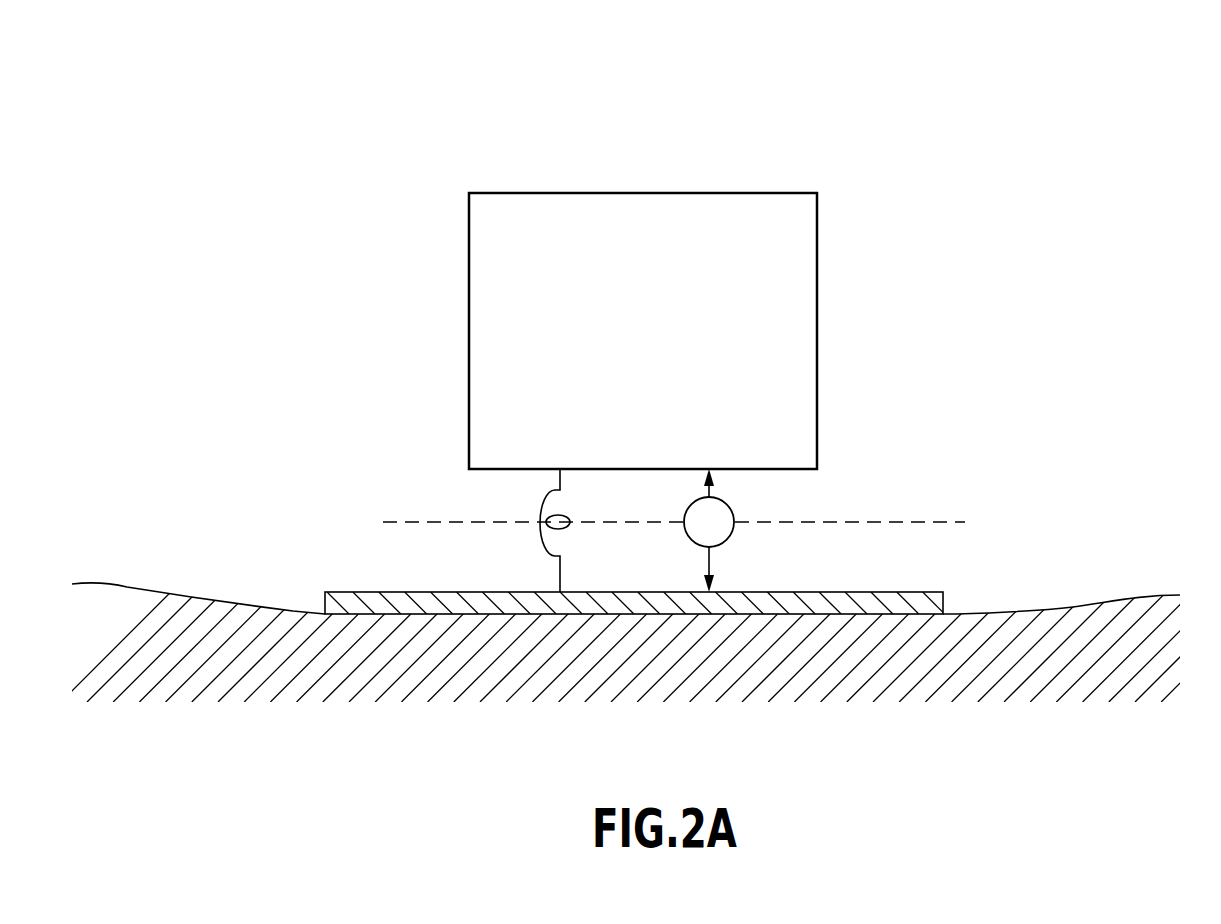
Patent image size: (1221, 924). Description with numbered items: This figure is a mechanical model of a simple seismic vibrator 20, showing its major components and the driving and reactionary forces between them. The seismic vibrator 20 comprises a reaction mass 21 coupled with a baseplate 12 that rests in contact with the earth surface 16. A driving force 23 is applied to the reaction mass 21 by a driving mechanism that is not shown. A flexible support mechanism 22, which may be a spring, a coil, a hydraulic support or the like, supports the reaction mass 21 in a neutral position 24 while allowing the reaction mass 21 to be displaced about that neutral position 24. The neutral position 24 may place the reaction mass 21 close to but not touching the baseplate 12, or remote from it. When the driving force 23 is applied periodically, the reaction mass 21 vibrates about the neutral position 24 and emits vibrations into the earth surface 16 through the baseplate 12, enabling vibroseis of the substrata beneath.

The seismic vibrator 20 is at (690, 304).
The reaction mass 21 is at (818, 314).
The flexible support mechanism 22 is at (541, 500).
The driving force f1 23 is at (733, 513).
The neutral position 24 is at (931, 521).
The baseplate 12 is at (357, 591).
The earth surface 16 is at (1070, 604).